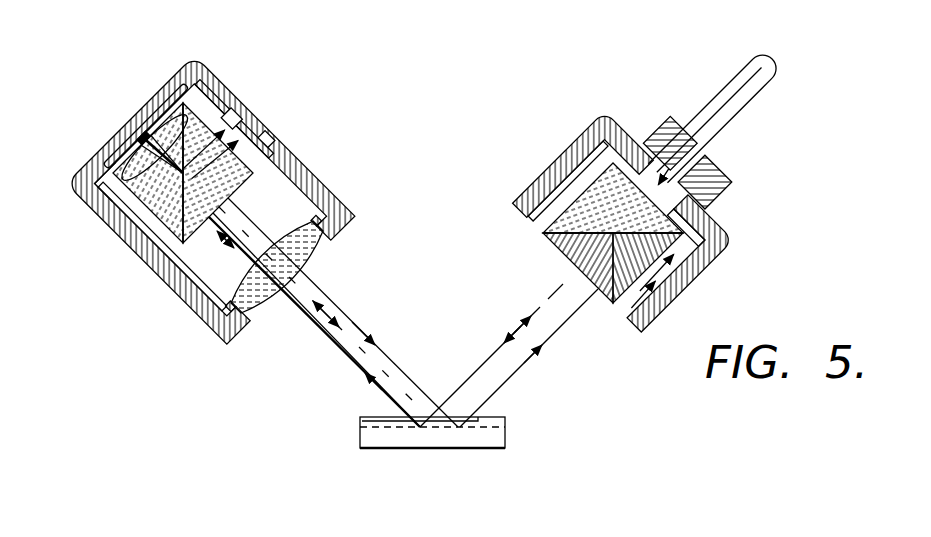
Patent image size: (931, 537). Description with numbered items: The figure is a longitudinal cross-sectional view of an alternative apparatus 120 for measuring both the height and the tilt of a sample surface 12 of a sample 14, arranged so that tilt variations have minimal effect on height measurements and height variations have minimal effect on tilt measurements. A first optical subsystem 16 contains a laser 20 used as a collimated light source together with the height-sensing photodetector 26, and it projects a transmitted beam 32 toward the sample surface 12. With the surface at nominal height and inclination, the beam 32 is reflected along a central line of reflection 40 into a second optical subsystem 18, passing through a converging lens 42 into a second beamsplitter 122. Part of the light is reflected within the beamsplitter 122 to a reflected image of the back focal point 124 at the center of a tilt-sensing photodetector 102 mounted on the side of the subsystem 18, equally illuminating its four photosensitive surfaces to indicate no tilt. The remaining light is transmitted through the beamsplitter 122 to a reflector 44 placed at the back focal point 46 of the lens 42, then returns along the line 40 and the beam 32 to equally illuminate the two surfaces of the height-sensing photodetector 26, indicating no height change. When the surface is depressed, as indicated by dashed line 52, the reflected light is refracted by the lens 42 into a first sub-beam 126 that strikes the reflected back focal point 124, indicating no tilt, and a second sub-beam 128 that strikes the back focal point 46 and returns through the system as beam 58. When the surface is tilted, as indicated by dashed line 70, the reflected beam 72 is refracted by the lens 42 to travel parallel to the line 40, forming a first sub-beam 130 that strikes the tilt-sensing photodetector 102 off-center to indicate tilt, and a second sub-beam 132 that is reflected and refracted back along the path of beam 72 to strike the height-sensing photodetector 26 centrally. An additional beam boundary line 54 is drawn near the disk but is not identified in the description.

The sample surface 12 is at (508, 410).
The sample 14 is at (450, 451).
The first optical subsystem 16 is at (616, 211).
The second optical subsystem 18 is at (210, 200).
The laser 20 is at (725, 126).
The height-sensing photodetector 26 is at (664, 263).
The transmitted beam 32 is at (540, 305).
The central line of reflection 40 is at (349, 336).
The converging lens 42 is at (277, 267).
The reflector 44 is at (114, 181).
The back focal point 46 is at (165, 145).
The dashed line 52 is at (506, 426).
The focused beam boundary 54 is at (378, 370).
The beam 58 is at (322, 310).
The dashed line 70 is at (497, 415).
The reflected beam 72 is at (377, 370).
The tilt-sensing photodetector 102 is at (212, 97).
The alternative apparatus 120 is at (226, 409).
The second beamsplitter 122 is at (116, 292).
The reflected image of back focal point 124 is at (231, 118).
The first sub-beam 126 is at (254, 139).
The second sub-beam 128 is at (154, 147).
The first sub-beam 130 is at (266, 139).
The second sub-beam 132 is at (162, 246).